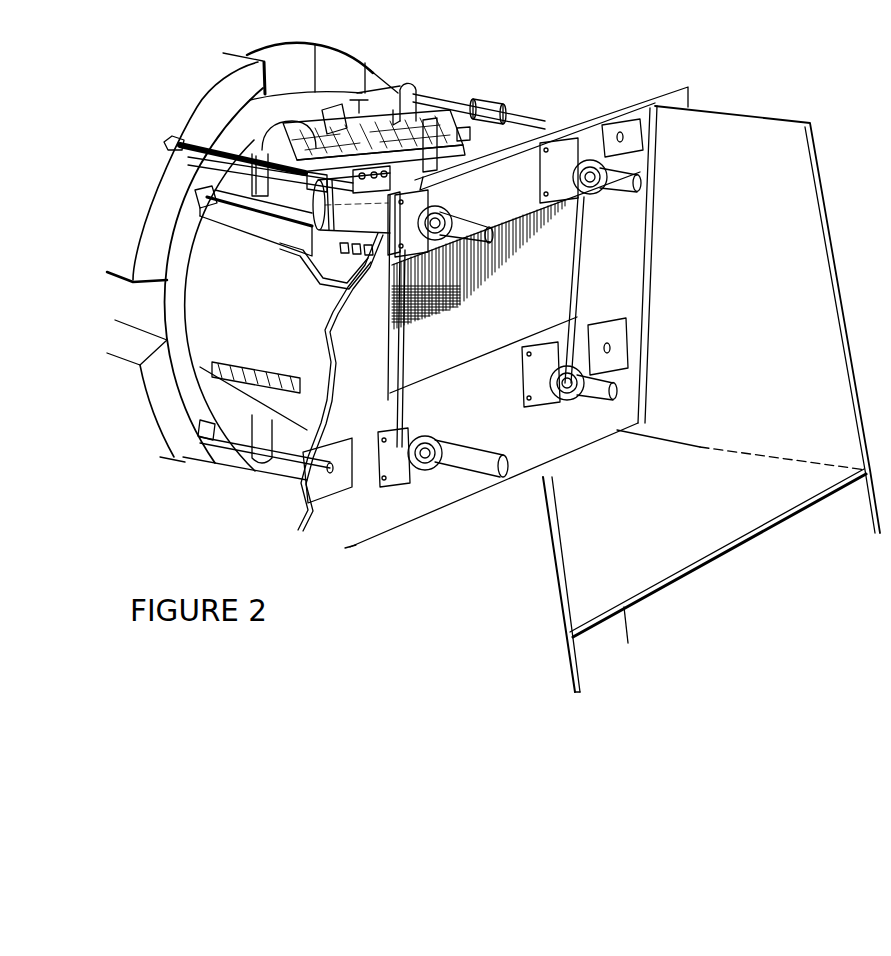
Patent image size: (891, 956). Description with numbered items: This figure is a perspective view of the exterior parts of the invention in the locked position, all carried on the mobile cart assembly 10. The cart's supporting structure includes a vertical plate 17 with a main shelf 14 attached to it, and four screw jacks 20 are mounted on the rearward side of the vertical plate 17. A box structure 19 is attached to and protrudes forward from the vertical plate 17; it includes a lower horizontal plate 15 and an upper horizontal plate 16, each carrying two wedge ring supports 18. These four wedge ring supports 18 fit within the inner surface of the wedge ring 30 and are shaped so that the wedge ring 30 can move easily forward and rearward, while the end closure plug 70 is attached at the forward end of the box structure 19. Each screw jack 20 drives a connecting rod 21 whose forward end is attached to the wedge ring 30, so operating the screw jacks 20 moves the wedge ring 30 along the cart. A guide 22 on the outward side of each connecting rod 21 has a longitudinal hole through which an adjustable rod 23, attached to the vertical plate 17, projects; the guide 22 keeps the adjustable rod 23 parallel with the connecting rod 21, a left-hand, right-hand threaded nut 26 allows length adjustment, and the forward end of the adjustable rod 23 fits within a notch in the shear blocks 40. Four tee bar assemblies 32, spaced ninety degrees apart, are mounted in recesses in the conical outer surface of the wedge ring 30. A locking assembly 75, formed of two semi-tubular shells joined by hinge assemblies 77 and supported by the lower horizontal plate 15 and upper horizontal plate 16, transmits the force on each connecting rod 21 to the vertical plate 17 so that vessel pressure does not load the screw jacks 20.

The cart assembly 10 is at (835, 253).
The main shelf 14 is at (742, 547).
The lower horizontal plate 15 is at (435, 362).
The upper horizontal plate 16 is at (213, 220).
The vertical plate 17 is at (400, 503).
The wedge ring supports 18 is at (280, 150).
The box structure 19 is at (517, 288).
The screw jacks 20 is at (440, 205).
The connecting rod 21 is at (210, 182).
The guide 22 is at (412, 82).
The adjustable rod 23 is at (447, 93).
The left-hand, right-hand threaded nut 26 is at (493, 103).
The wedge ring 30 is at (266, 115).
The tee bar assemblies 32 is at (203, 423).
The shear blocks 40 is at (167, 381).
The end closure plug 70 is at (180, 140).
The locking assembly 75 is at (331, 238).
The hinge assemblies 77 is at (315, 256).